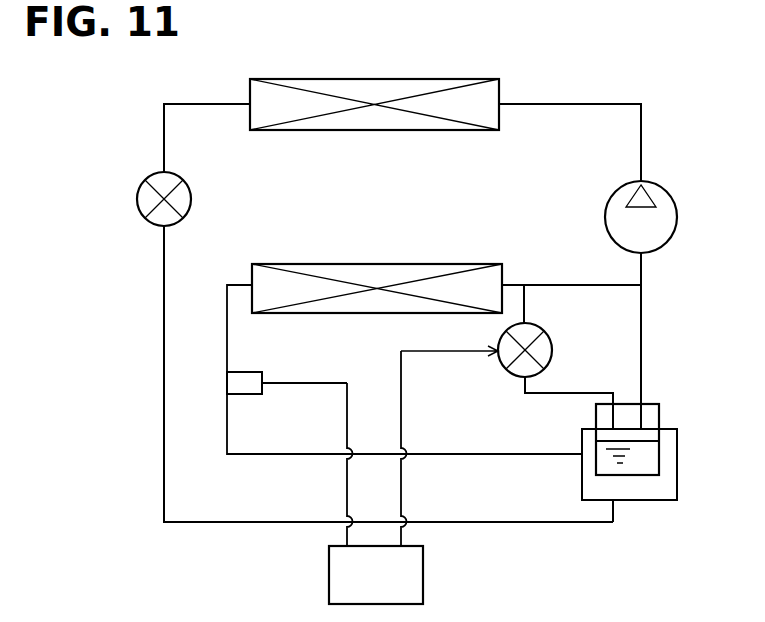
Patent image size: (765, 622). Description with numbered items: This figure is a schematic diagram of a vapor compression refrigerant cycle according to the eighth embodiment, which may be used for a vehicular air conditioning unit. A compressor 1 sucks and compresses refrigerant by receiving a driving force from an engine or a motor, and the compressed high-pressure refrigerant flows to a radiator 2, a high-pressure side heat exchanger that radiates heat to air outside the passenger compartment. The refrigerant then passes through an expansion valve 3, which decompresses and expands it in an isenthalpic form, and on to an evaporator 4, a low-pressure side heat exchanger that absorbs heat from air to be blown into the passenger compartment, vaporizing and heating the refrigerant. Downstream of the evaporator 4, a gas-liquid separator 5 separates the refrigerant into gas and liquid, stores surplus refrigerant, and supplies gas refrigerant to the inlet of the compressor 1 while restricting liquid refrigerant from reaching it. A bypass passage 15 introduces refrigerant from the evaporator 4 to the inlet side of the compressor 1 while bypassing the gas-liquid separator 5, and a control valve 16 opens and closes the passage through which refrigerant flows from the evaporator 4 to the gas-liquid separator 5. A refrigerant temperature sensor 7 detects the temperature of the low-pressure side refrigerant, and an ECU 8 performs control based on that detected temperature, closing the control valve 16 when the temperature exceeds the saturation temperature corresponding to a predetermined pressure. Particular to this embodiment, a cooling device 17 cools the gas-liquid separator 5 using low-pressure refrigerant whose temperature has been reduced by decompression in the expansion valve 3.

The compressor 1 is at (677, 217).
The radiator 2 is at (440, 79).
The expansion valve 3 is at (136, 198).
The evaporator 4 is at (440, 264).
The gas-liquid separator 5 is at (659, 407).
The refrigerant temperature sensor 7 is at (246, 372).
The ECU 8 is at (329, 576).
The bypass passage 15 is at (562, 285).
The control valve 16 is at (515, 378).
The cooling device 17 is at (677, 460).